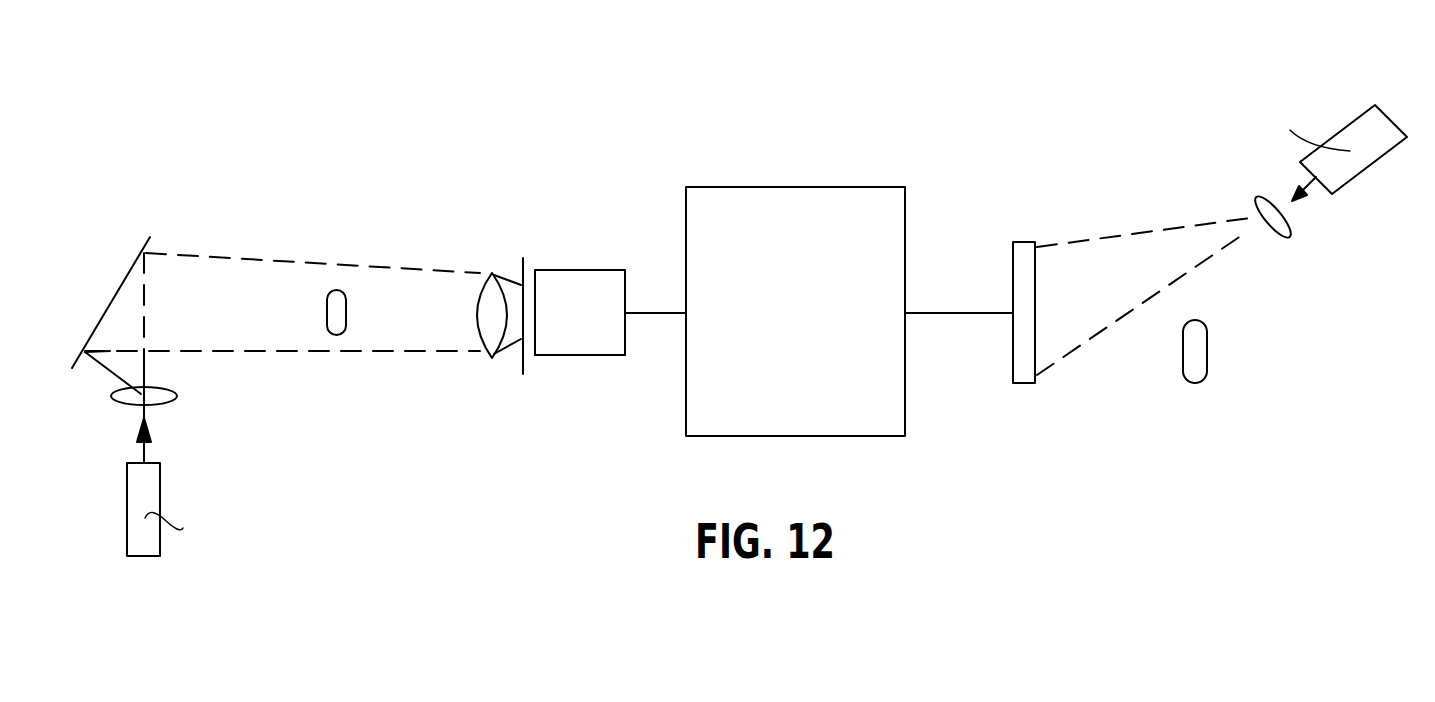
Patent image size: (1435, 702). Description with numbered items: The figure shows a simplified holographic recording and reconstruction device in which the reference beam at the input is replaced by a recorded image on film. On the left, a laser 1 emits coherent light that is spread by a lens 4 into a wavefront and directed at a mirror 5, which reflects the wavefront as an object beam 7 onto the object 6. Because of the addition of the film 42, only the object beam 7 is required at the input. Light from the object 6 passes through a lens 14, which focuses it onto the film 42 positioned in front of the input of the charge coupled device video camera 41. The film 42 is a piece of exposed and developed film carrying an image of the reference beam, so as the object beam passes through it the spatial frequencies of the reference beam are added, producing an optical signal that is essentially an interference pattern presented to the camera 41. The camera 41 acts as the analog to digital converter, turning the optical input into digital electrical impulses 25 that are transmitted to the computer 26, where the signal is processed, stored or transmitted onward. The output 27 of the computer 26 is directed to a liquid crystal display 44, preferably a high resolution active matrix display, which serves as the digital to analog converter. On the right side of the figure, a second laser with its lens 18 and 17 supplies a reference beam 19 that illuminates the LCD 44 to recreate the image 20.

The laser 1 is at (160, 475).
The lens 4 is at (177, 395).
The mirror 5 is at (127, 278).
The object 6 is at (341, 303).
The object beam 7 is at (250, 282).
The lens 14 is at (493, 274).
The charge coupled device video camera 41 is at (597, 270).
The film 42 is at (525, 362).
The digital electrical impulses 25 is at (650, 313).
The computer 26 is at (762, 187).
The output of the computer 27 is at (960, 313).
The liquid crystal display 44 is at (1024, 243).
The reference beam 19 is at (1160, 258).
The lens 18 is at (1288, 236).
The laser 17 is at (1372, 165).
The image 20 is at (1200, 362).